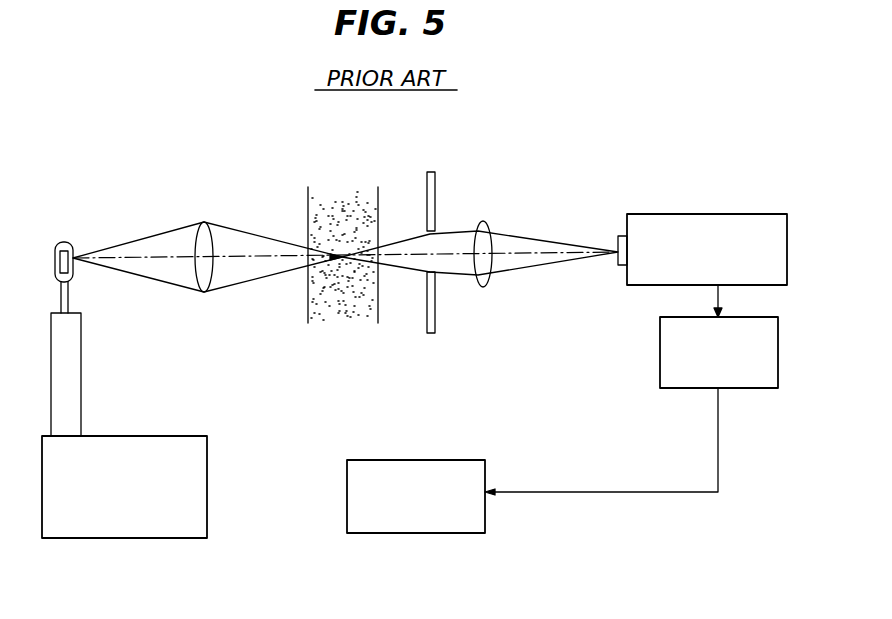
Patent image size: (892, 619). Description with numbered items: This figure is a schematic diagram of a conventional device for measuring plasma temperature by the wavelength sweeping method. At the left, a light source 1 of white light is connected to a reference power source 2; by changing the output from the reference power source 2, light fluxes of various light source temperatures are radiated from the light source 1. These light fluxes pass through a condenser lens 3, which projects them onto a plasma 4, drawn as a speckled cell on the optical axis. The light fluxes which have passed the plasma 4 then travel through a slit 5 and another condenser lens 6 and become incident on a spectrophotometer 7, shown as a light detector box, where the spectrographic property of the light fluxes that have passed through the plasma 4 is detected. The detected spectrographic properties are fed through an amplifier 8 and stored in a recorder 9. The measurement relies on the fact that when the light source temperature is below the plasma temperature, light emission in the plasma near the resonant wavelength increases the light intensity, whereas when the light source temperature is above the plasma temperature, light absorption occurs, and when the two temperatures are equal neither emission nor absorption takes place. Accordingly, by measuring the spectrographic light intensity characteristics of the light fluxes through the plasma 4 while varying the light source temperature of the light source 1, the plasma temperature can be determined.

The light source 1 is at (66, 241).
The reference power source 2 is at (136, 436).
The condenser lens 3 is at (205, 223).
The plasma 4 is at (342, 190).
The slit 5 is at (433, 172).
The condenser lens 6 is at (485, 221).
The spectrophotometer 7 is at (695, 214).
The amplifier 8 is at (660, 348).
The recorder 9 is at (408, 460).